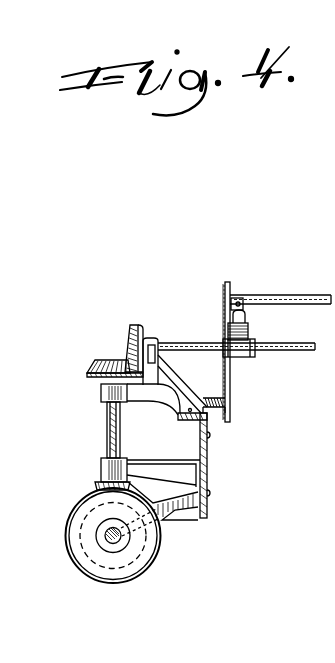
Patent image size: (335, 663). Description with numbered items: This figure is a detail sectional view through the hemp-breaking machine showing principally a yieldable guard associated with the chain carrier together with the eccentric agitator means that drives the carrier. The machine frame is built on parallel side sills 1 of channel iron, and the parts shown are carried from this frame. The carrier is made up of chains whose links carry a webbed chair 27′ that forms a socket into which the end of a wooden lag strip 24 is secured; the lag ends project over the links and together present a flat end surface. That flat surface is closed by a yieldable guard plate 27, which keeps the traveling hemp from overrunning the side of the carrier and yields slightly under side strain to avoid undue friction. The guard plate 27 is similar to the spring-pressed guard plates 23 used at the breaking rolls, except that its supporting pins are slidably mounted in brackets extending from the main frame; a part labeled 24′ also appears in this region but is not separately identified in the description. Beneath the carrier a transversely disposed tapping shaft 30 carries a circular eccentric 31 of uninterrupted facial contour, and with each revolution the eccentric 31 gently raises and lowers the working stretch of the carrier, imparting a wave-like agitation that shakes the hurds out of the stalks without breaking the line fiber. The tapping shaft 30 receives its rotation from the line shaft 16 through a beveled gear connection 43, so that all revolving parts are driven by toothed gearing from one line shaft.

The side sills 1 is at (208, 463).
The line shaft 16 is at (120, 542).
The guard plates 23 is at (220, 403).
The lag strip 24 is at (288, 297).
The lug 24′ is at (216, 414).
The yieldable guard plate 27 is at (226, 288).
The webbed chair 27′ is at (247, 320).
The tapping shaft 30 is at (187, 342).
The circular eccentric 31 is at (242, 359).
The beveled gear connection 43 is at (99, 437).